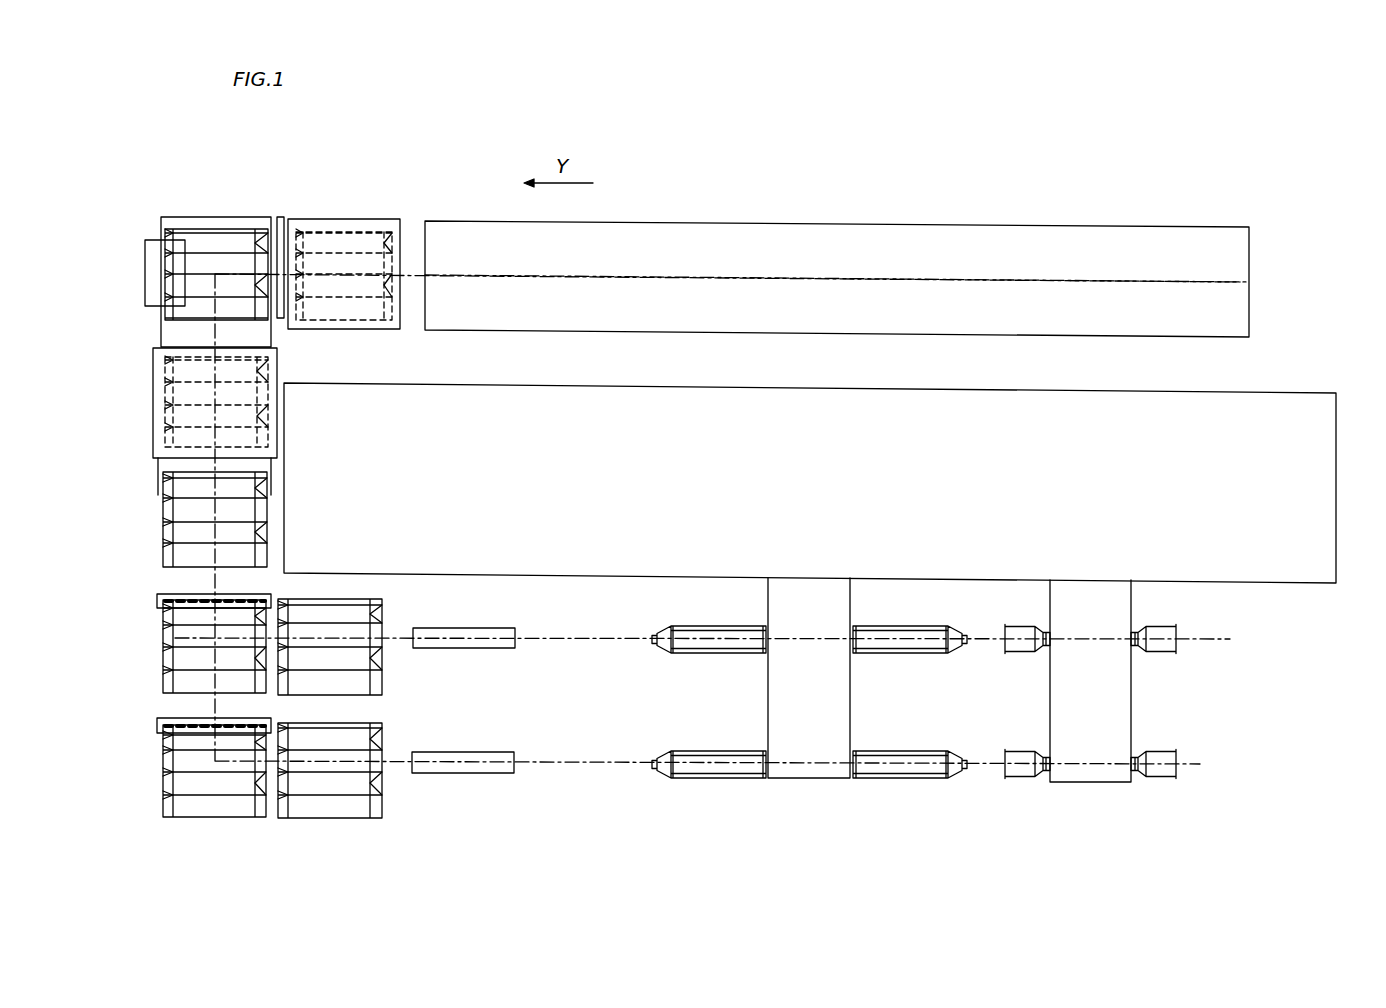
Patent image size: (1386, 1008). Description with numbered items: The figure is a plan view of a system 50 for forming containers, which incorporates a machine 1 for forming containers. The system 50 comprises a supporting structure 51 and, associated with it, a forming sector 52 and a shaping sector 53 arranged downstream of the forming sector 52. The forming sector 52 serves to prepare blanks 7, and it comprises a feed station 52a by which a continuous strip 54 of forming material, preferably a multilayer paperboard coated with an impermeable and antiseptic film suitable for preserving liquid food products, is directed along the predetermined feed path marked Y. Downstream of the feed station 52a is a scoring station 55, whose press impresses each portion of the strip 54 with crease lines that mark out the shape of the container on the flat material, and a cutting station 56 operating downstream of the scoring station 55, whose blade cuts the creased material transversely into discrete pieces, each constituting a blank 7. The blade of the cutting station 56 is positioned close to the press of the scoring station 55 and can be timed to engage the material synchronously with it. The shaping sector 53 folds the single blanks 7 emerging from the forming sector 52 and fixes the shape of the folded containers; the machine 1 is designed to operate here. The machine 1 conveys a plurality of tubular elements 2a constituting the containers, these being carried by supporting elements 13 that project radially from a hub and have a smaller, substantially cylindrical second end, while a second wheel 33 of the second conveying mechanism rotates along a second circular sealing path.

The machine for forming containers 1 is at (942, 793).
The tubular element 2a is at (495, 628).
The blank 7 is at (214, 234).
The supporting element 13 is at (695, 653).
The second wheel 33 is at (1131, 708).
The system 50 is at (750, 222).
The supporting structure 51 is at (1284, 393).
The forming sector 52 is at (440, 221).
The feed station 52a is at (937, 257).
The shaping sector 53 is at (398, 605).
The continuous strip 54 is at (837, 279).
The scoring station 55 is at (357, 328).
The cutting station 56 is at (278, 318).